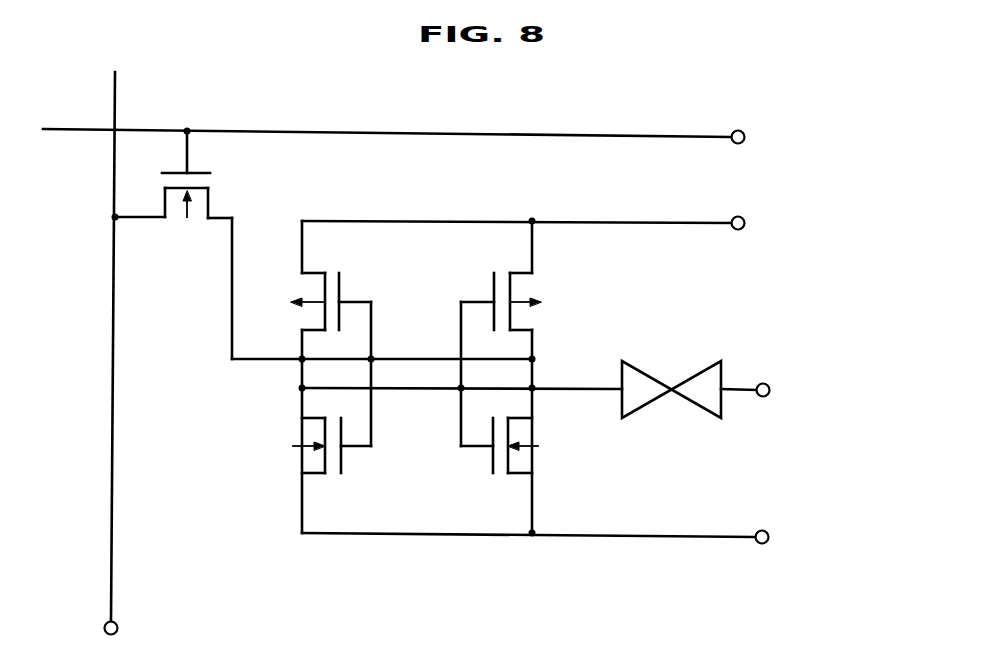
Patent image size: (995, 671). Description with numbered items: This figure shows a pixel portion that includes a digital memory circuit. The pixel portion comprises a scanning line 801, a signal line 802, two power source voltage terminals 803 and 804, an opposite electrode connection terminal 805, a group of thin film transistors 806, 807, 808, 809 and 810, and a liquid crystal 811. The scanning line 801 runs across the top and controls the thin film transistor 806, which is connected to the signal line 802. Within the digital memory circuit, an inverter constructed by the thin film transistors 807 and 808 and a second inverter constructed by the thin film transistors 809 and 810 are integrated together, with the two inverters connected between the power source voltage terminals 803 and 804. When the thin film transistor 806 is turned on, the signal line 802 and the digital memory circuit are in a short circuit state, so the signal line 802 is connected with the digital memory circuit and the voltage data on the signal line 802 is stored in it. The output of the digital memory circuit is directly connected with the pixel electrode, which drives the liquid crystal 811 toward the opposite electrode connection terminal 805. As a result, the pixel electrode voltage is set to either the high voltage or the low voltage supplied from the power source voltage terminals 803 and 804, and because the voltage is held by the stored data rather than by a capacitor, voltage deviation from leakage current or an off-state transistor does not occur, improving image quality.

The scanning line 801 is at (745, 137).
The signal line 802 is at (113, 604).
The power source voltage terminal 803 is at (745, 223).
The power source voltage terminal 804 is at (769, 537).
The opposite electrode connection terminal 805 is at (770, 390).
The thin film transistor 806 is at (225, 205).
The thin film transistor 807 is at (350, 293).
The thin film transistor 808 is at (358, 453).
The thin film transistor 809 is at (537, 285).
The thin film transistor 810 is at (540, 455).
The liquid crystal 811 is at (692, 378).